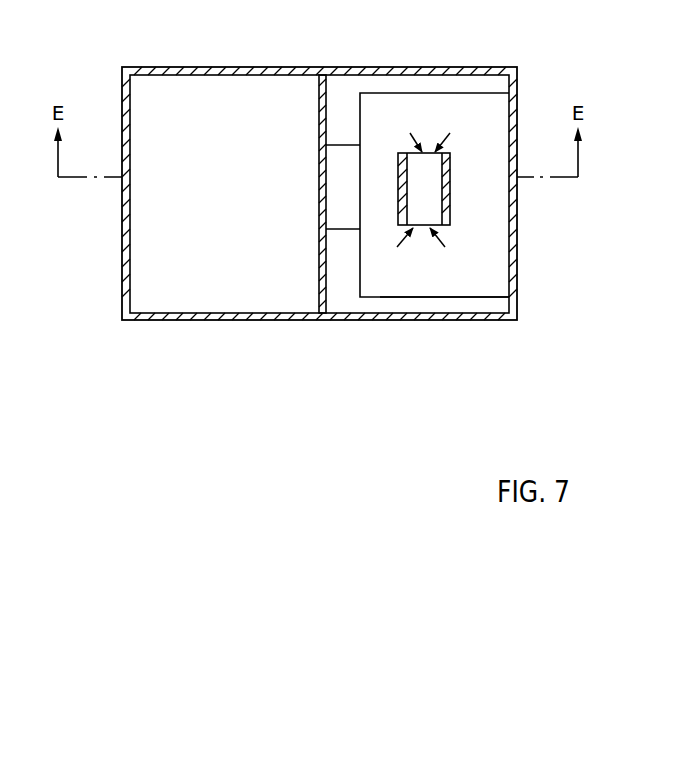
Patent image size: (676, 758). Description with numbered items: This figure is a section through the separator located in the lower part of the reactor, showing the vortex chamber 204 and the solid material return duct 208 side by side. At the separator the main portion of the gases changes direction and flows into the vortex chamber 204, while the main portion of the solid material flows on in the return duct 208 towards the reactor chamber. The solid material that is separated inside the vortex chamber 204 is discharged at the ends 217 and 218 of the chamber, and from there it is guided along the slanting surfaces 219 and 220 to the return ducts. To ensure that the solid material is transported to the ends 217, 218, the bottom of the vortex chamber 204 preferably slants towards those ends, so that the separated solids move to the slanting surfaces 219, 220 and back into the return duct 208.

The vortex chamber 204 is at (195, 278).
The return duct 208 is at (338, 95).
The end of the vortex chamber 217 is at (470, 95).
The end of the vortex chamber 218 is at (460, 297).
The slanting surface 219 is at (414, 82).
The slanting surface 220 is at (405, 306).